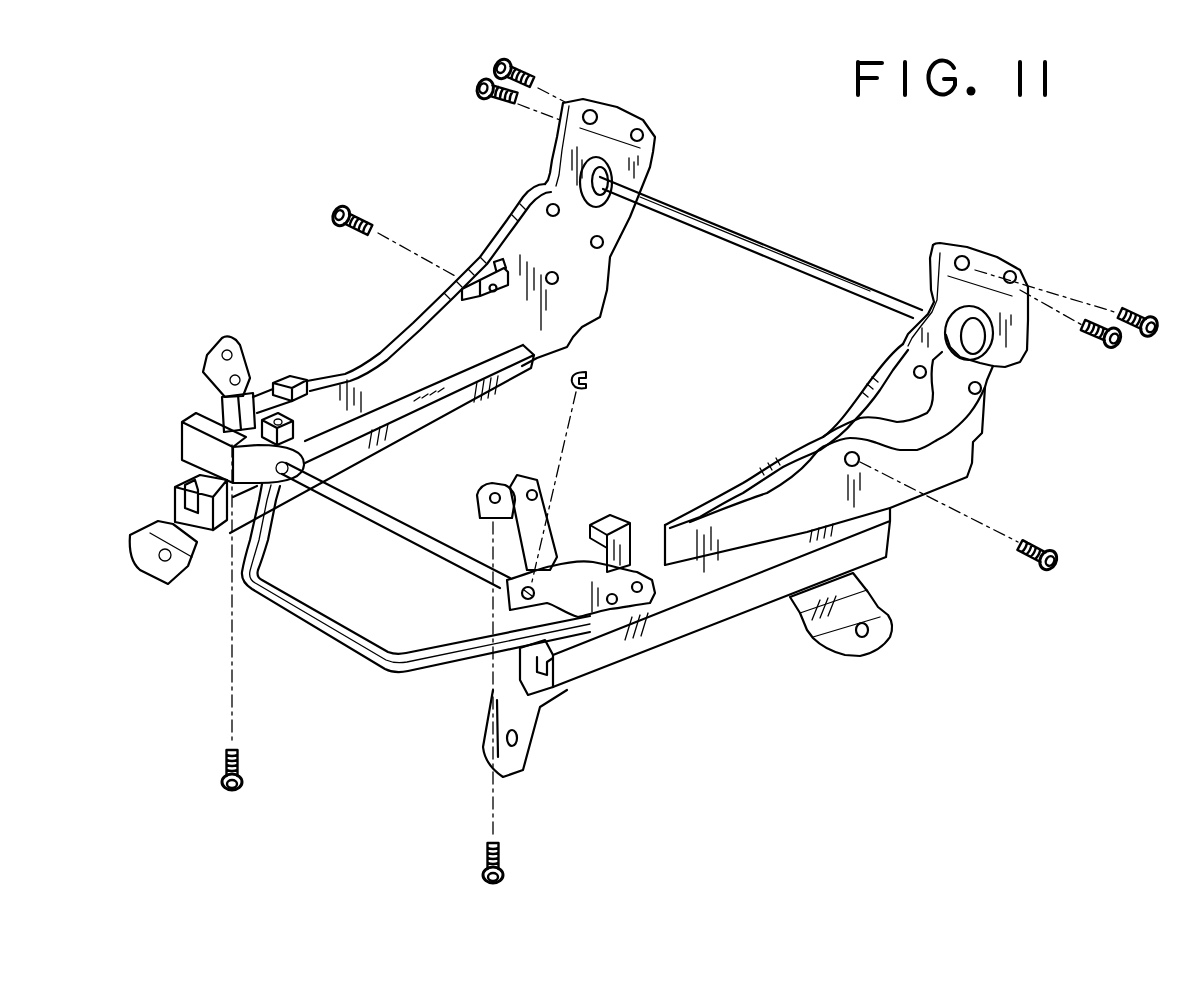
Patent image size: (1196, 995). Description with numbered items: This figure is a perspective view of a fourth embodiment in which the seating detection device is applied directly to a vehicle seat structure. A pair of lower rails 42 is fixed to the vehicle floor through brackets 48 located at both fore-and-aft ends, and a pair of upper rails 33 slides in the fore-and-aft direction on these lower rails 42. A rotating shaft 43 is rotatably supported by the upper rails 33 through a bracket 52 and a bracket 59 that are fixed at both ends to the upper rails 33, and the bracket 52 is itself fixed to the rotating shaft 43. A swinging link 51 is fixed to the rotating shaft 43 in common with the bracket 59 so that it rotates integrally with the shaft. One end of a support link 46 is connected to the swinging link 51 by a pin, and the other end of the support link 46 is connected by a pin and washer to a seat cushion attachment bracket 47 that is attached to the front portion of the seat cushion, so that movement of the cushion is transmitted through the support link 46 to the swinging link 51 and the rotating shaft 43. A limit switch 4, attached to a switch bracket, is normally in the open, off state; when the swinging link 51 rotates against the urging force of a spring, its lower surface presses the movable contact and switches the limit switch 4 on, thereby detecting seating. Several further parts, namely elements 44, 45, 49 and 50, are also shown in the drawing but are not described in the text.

The limit switch 4 is at (340, 450).
The upper rails 33 is at (430, 350).
The lower rails 42 is at (172, 490).
The rotating shaft 43 is at (440, 553).
The wire loop 44 is at (320, 632).
The bracket assembly 45 is at (170, 408).
The support link 46 is at (216, 400).
The seat cushion attachment bracket 47 is at (213, 343).
The brackets 48 is at (153, 575).
The clip 49 is at (592, 380).
The screw 50 is at (236, 795).
The swinging link 51 is at (264, 395).
The bracket 52 is at (587, 605).
The bracket 59 is at (190, 444).